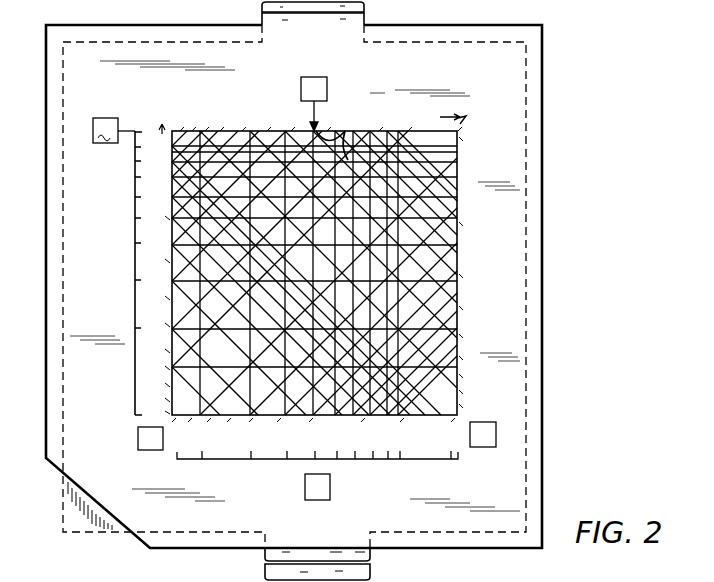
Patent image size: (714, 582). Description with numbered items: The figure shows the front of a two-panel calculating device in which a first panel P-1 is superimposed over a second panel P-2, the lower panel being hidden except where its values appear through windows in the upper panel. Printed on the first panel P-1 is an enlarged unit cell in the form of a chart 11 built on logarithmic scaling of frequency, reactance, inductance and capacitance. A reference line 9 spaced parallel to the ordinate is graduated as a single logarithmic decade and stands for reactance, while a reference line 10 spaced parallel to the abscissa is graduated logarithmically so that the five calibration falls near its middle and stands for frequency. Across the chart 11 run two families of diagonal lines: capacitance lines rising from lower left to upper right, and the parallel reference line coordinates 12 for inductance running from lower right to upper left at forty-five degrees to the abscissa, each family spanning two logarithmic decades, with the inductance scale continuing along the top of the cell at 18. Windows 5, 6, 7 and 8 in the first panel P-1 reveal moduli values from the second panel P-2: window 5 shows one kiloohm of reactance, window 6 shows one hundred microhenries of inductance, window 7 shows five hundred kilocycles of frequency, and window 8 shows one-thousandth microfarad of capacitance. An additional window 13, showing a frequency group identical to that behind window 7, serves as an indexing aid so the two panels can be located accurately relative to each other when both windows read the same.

The first panel P-1 is at (48, 437).
The second panel P-2 is at (68, 503).
The window 5 is at (109, 123).
The window 6 is at (138, 436).
The window 7 is at (330, 489).
The window 8 is at (495, 443).
The reference line 9 is at (135, 368).
The reference line 10 is at (220, 459).
The chart grid 11 is at (196, 322).
The parallel reference line coordinates 12 is at (346, 130).
The window 13 is at (322, 83).
The top of unit cell inductance range 18 is at (464, 111).